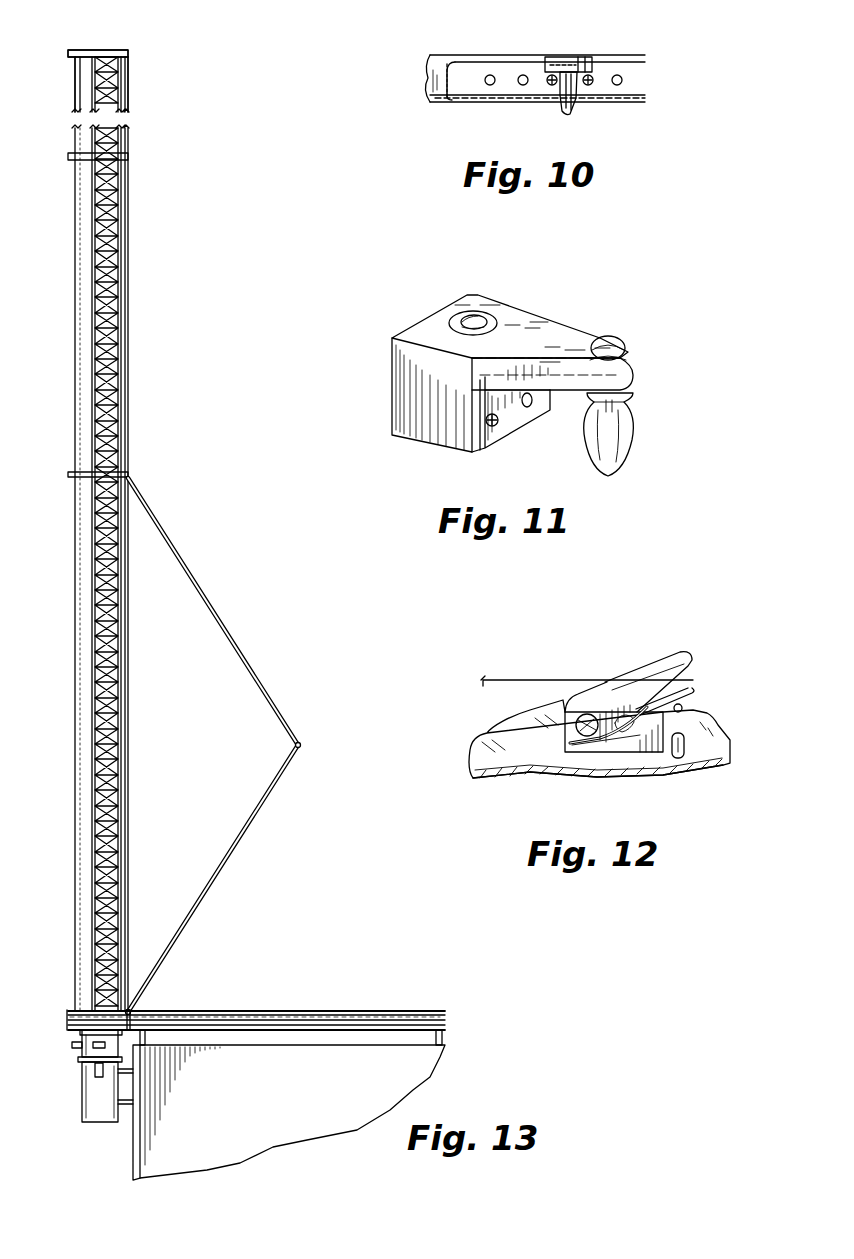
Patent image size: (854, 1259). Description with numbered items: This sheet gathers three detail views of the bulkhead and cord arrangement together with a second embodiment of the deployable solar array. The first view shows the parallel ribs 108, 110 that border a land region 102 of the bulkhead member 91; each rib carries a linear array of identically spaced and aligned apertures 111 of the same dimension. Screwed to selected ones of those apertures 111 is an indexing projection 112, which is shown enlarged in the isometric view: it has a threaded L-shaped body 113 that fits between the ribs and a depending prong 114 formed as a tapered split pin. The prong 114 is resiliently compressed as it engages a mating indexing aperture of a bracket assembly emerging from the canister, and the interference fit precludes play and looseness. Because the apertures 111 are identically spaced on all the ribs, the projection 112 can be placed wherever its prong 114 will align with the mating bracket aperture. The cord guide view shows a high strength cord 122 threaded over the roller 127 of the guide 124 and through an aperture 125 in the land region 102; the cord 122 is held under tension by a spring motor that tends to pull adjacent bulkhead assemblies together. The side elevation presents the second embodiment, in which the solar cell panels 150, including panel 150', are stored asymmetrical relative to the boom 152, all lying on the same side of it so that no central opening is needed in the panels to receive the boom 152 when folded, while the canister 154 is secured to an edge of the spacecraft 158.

In FIG. 10, the rib 108 is at (490, 75).
In FIG. 10, the rib 110 is at (543, 100).
In FIG. 10, the apertures 111 is at (490, 86).
In FIG. 10, the indexing projection 112 is at (590, 48).
In FIG. 11, the indexing projection 112 is at (642, 350).
In FIG. 10, the L-shaped body 113 is at (563, 57).
In FIG. 11, the L-shaped body 113 is at (400, 387).
In FIG. 10, the depending prong 114 is at (574, 100).
In FIG. 11, the depending prong 114 is at (630, 462).
In FIG. 12, the land region 102 is at (487, 733).
In FIG. 12, the member 91 is at (512, 778).
In FIG. 12, the cord 122 is at (537, 680).
In FIG. 12, the guide 124 is at (700, 673).
In FIG. 12, the aperture 125 is at (680, 758).
In FIG. 12, the roller 127 is at (695, 692).
In FIG. 13, the panels 150 is at (256, 992).
In FIG. 13, the panel 150' is at (130, 164).
In FIG. 13, the boom 152 is at (118, 755).
In FIG. 13, the canister 154 is at (95, 1117).
In FIG. 13, the spacecraft 158 is at (297, 1137).